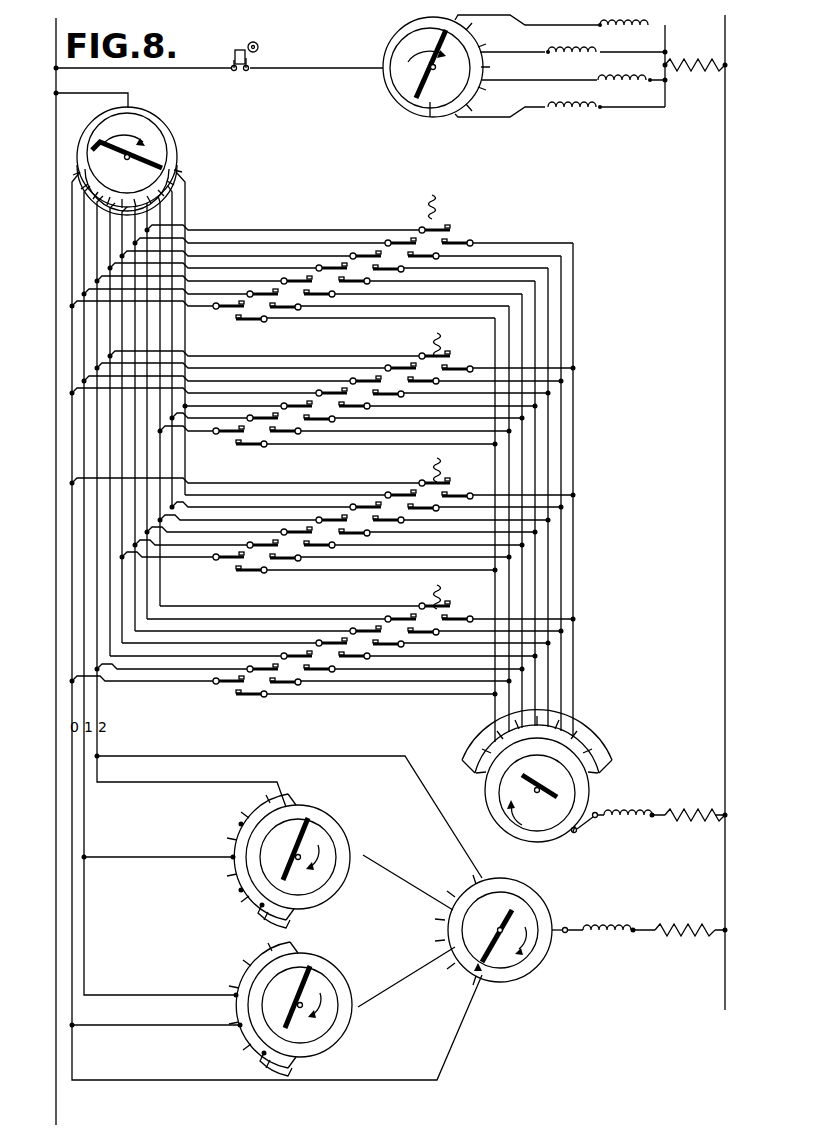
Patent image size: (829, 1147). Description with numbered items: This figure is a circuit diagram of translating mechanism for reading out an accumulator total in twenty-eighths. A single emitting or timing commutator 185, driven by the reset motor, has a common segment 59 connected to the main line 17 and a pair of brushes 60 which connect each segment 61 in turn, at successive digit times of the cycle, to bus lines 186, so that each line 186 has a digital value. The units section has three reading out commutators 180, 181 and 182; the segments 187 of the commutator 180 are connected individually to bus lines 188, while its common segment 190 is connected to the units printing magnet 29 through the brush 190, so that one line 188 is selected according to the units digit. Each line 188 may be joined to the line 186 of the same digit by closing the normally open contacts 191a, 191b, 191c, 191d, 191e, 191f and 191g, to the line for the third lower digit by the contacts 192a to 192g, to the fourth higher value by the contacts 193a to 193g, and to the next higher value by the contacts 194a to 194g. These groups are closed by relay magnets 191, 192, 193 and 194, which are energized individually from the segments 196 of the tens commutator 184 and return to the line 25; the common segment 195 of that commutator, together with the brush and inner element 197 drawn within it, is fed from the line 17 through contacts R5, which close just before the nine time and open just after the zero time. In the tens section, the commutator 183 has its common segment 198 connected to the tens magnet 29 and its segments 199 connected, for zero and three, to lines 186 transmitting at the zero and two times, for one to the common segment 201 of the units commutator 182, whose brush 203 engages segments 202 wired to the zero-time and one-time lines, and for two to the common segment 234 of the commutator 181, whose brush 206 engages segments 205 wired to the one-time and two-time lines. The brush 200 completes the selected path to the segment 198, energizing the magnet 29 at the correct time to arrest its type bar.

The main line 17 is at (54, 130).
The line 25 is at (725, 122).
The printing magnet 29 is at (642, 825).
The common segment 59 is at (166, 136).
The brushes 60 is at (166, 145).
The segments 61 is at (174, 166).
The reading out commutator 180 is at (588, 787).
The reading out commutator 181 is at (328, 846).
The units reading out commutator 182 is at (328, 1018).
The tens reading out commutator 183 is at (512, 970).
The commutator 184 is at (415, 95).
The emitting or timing commutator 185 is at (138, 124).
The bus lines 186 is at (164, 222).
The segments 187 is at (492, 775).
The bus lines 188 is at (548, 715).
The common segment 190 is at (555, 816).
The relay magnet 191 is at (431, 190).
The relay contact 191a is at (449, 227).
The relay contact 191b is at (404, 242).
The relay contact 191c is at (392, 270).
The relay contact 191d is at (353, 283).
The relay contact 191e is at (317, 296).
The relay contact 191f is at (282, 308).
The relay contact 191g is at (243, 320).
The relay magnet 192 is at (445, 333).
The relay contact 192a is at (449, 355).
The relay contact 192g is at (247, 447).
The relay magnet 193 is at (432, 464).
The relay contact 193a is at (449, 482).
The relay contact 193g is at (247, 573).
The relay magnet 194 is at (432, 593).
The relay contact 194a is at (449, 607).
The relay contact 194g is at (247, 697).
The common segment 195 is at (397, 38).
The segments 196 is at (440, 113).
The switch wiper 197 is at (418, 85).
The common segment 198 is at (536, 961).
The segments 199 is at (472, 968).
The brush 200 is at (520, 906).
The common segment 201 is at (341, 973).
The segments 202 is at (246, 1015).
The brush 203 is at (320, 978).
The segments 205 is at (290, 805).
The brush 206 is at (336, 822).
The common segment 234 is at (338, 884).
The contacts R5 is at (237, 72).